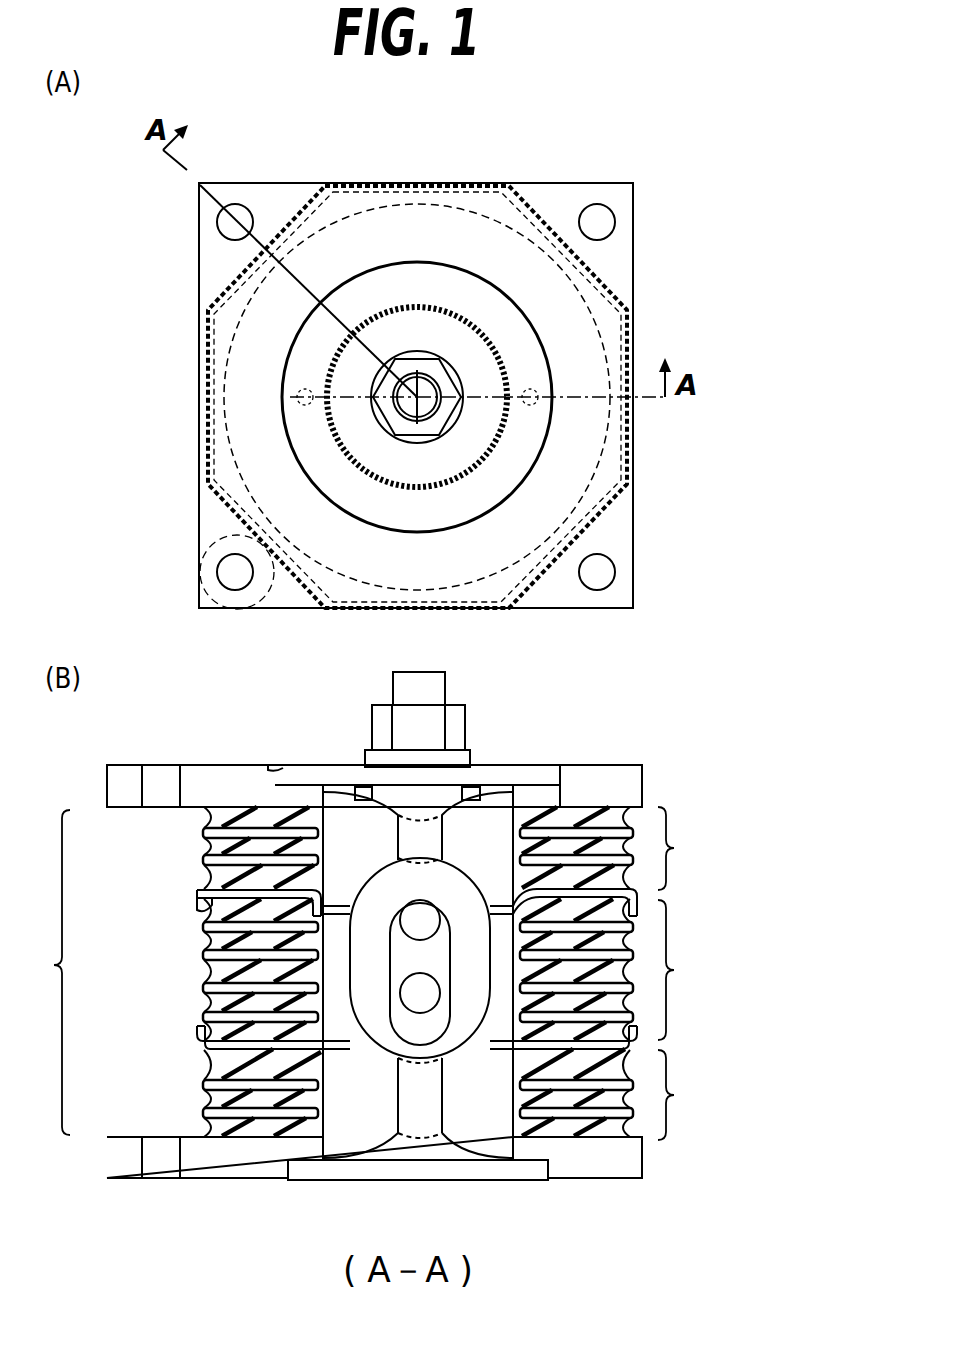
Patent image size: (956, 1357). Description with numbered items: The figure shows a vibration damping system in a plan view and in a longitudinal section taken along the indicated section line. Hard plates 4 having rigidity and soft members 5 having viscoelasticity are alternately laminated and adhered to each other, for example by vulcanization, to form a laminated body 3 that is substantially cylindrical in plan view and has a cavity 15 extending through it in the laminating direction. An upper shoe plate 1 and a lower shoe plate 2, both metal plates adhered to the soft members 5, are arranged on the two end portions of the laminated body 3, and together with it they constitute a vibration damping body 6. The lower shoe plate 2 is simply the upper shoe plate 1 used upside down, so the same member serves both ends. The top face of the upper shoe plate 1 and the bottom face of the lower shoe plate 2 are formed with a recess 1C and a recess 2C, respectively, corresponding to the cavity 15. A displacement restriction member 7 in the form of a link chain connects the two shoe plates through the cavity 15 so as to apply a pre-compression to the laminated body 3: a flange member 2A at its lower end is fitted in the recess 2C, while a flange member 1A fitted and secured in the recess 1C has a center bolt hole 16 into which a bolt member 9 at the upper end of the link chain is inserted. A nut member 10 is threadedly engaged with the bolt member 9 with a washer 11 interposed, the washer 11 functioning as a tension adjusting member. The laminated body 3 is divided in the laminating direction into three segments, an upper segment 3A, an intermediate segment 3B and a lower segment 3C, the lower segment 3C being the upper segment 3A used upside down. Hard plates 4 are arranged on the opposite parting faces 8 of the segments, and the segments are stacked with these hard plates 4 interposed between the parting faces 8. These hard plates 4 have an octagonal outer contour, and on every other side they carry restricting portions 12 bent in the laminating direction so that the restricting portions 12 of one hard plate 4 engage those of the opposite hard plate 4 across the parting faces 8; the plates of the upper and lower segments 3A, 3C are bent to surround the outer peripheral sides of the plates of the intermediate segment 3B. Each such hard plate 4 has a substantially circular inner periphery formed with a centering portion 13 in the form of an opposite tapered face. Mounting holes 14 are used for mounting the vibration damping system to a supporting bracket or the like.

The upper shoe plate 1 is at (618, 283).
The flange member 1A is at (515, 468).
The recess 1C is at (282, 768).
The lower shoe plate 2 is at (213, 1160).
The flange member 2A is at (547, 1183).
The recess 2C is at (296, 1178).
The laminated body 3 is at (262, 447).
The upper segment 3A is at (685, 848).
The intermediate segment 3B is at (686, 970).
The lower segment 3C is at (686, 1095).
The hard plate 4 is at (580, 830).
The soft member 5 is at (610, 852).
The vibration damping body 6 is at (138, 823).
The displacement restriction member 7 is at (455, 890).
The parting face 8 is at (212, 908).
The bolt member 9 is at (403, 412).
The nut member 10 is at (455, 390).
The washer 11 is at (370, 758).
The restricting portion 12 is at (440, 185).
The centering portion 13 is at (300, 958).
The mounting hole 14 is at (603, 225).
The cavity 15 is at (500, 1060).
The center bolt hole 16 is at (430, 770).